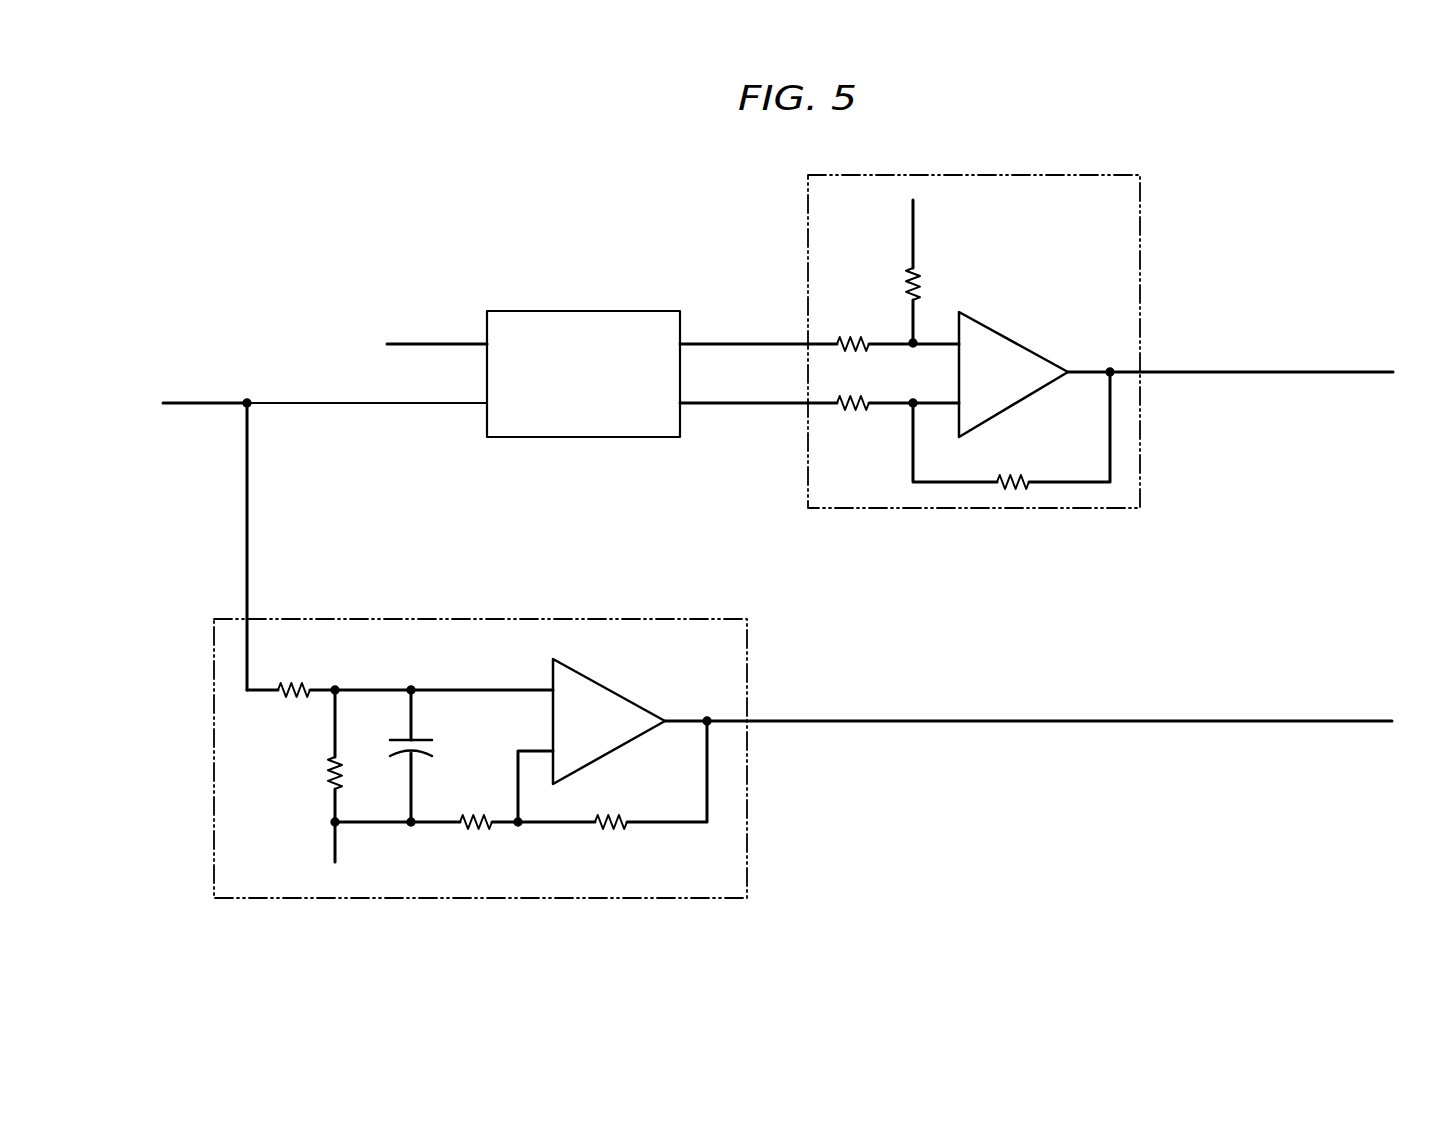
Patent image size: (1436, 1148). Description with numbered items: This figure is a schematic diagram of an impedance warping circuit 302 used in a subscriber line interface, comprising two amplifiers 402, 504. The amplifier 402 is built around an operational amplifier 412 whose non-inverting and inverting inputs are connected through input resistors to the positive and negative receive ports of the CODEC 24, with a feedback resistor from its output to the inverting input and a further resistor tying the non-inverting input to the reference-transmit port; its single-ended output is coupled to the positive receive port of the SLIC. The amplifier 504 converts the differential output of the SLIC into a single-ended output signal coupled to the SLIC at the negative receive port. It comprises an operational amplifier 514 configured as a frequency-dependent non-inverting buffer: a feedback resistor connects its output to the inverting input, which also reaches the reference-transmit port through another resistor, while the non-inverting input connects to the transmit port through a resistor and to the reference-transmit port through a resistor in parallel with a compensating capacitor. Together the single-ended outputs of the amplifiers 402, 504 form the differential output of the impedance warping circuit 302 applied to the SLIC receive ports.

The CODEC 24 is at (578, 311).
The impedance warping circuit 302 is at (1124, 832).
The amplifier 402 is at (1060, 175).
The amplifier 412 is at (1010, 337).
The amplifier 504 is at (654, 619).
The operational amplifier 514 is at (603, 683).